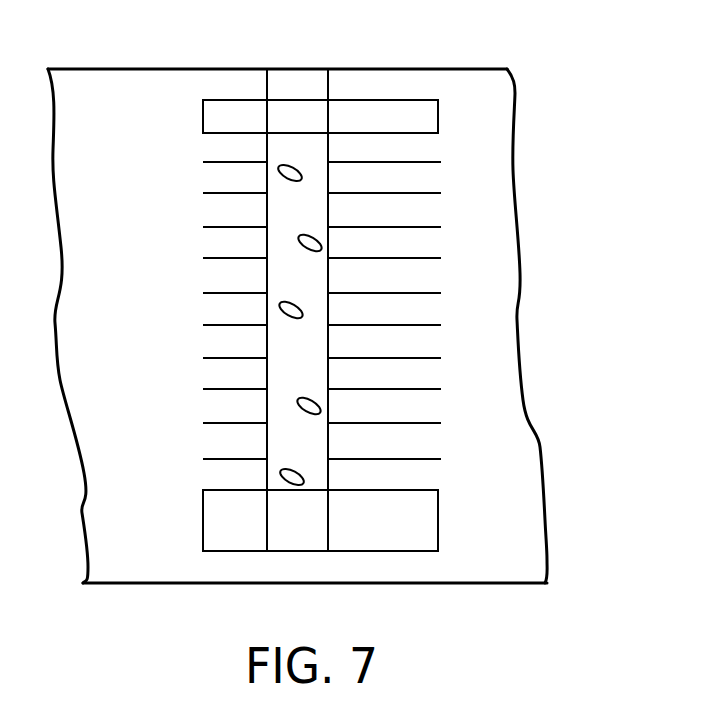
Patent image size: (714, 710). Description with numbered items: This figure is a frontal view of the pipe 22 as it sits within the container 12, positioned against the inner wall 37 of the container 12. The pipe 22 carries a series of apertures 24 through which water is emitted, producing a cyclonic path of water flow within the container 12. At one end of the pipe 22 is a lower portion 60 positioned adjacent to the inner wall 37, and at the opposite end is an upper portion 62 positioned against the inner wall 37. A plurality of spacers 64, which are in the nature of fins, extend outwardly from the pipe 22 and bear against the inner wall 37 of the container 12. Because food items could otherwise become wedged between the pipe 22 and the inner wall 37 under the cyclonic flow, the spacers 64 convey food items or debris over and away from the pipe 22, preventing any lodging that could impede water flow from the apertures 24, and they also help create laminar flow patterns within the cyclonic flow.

The container 12 is at (512, 450).
The inner wall 37 is at (457, 82).
The pipe 22 is at (303, 107).
The upper portion 62 is at (212, 120).
The spacers 64 is at (432, 193).
The apertures 24 is at (302, 176).
The lower portion 60 is at (425, 527).